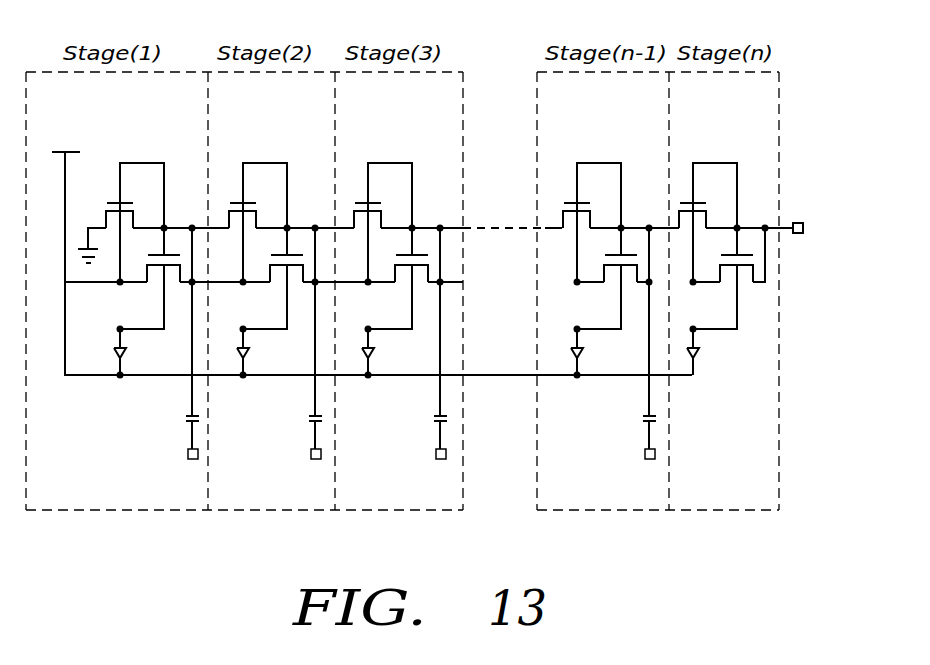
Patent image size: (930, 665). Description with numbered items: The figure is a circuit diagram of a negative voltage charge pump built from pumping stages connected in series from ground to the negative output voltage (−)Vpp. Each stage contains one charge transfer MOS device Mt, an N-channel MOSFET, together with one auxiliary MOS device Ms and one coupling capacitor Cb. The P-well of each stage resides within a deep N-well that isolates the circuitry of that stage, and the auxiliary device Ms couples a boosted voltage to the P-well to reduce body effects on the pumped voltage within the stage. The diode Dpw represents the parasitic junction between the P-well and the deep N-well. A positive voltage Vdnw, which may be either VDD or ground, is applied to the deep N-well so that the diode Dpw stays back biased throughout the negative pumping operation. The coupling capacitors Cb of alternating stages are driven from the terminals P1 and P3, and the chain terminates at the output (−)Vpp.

The charge transfer MOS device Mt is at (421, 222).
The auxiliary MOS device Ms is at (436, 278).
The diode Dpw is at (429, 352).
The coupling capacitor Cb is at (406, 338).
The first clock pulse terminal P1 is at (317, 470).
The third clock pulse terminal P3 is at (483, 470).
The positive voltage Vdnw is at (67, 205).
The negative output voltage Vpp is at (810, 213).